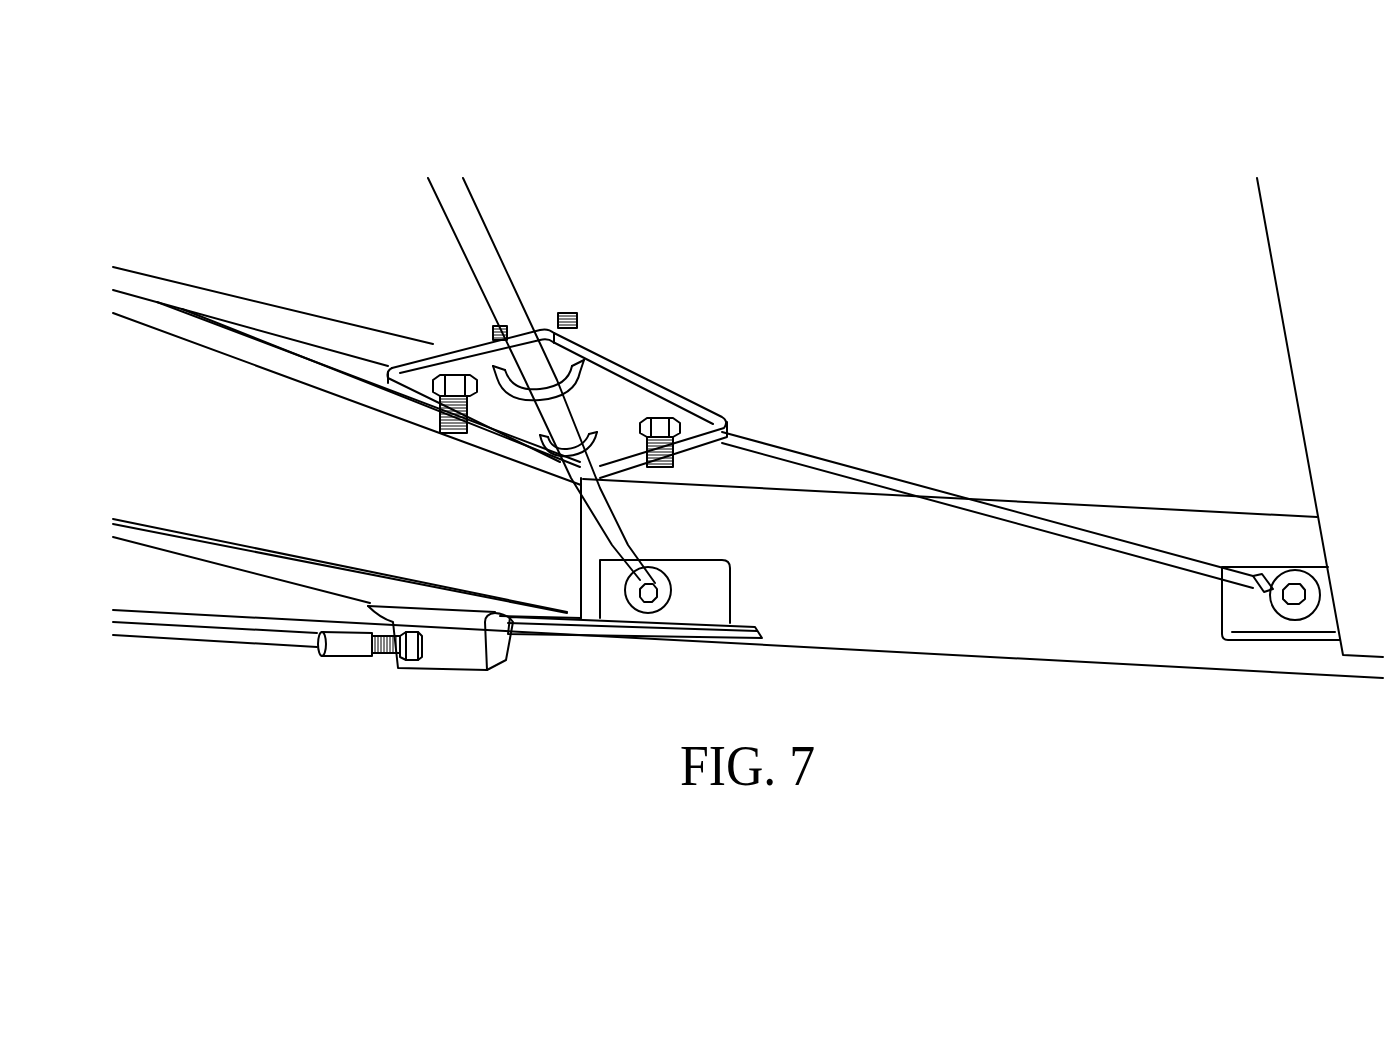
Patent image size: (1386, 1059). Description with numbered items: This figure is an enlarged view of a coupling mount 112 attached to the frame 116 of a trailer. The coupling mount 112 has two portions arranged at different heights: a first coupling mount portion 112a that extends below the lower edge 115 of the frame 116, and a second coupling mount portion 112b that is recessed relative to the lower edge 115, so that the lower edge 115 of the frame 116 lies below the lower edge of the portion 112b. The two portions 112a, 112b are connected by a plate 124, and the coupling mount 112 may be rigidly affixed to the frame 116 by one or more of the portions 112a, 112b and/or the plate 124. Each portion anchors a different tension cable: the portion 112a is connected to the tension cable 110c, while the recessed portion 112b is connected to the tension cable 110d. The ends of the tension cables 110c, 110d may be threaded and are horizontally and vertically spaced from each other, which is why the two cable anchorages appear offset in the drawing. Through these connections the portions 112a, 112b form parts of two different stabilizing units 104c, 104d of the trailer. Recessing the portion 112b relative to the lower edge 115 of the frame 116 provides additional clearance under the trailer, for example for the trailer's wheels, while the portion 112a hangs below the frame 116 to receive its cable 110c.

The stabilizing unit 104c is at (170, 682).
The stabilizing unit 104d is at (678, 338).
The tension cable 110c is at (248, 643).
The tension cable 110d is at (628, 538).
The coupling mount 112 is at (535, 657).
The first coupling mount portion 112a is at (440, 660).
The second coupling mount portion 112b is at (722, 590).
The lower edge 115 is at (975, 657).
The frame 116 is at (1100, 640).
The plate 124 is at (717, 633).